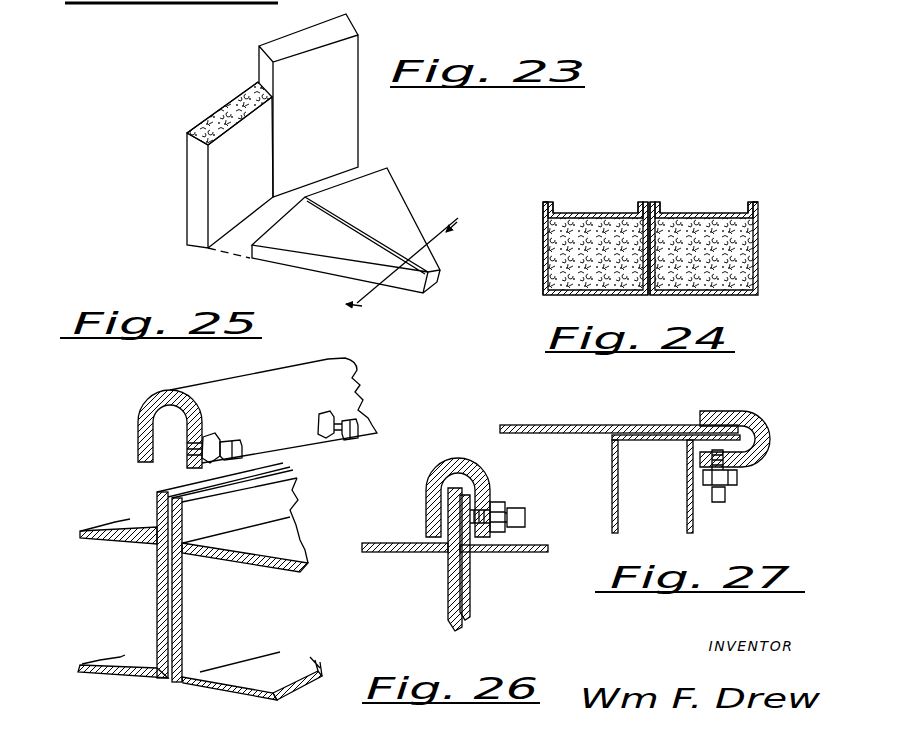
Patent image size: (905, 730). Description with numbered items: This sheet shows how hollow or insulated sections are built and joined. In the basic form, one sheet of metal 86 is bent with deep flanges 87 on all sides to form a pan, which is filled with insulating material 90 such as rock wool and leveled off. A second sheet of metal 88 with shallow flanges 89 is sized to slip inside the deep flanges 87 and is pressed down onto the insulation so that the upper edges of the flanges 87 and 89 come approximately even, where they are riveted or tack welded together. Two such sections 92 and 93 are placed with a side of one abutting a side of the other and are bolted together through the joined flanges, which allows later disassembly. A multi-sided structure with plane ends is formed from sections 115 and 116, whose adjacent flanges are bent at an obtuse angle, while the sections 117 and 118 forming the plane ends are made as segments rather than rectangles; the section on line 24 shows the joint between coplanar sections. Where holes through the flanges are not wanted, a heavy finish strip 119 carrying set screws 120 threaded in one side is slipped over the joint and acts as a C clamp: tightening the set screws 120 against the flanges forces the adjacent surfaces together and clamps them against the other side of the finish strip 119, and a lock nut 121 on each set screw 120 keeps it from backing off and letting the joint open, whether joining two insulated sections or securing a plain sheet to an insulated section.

In FIG. 23, the section line 24 is at (415, 272).
In FIG. 24, the sheet of metal 86 is at (563, 293).
In FIG. 24, the deep flanges 87 is at (760, 247).
In FIG. 24, the second sheet of metal 88 is at (597, 215).
In FIG. 24, the shallow flanges 89 is at (575, 200).
In FIG. 24, the insulating material 90 is at (546, 228).
In FIG. 24, the section 92 is at (713, 197).
In FIG. 24, the section 93 is at (540, 232).
In FIG. 23, the section 115 is at (183, 172).
In FIG. 23, the section 116 is at (360, 55).
In FIG. 23, the section 117 is at (270, 265).
In FIG. 23, the section 118 is at (368, 170).
In FIG. 25, the heavy finish strip 119 is at (257, 413).
In FIG. 26, the heavy finish strip 119 is at (452, 458).
In FIG. 27, the heavy finish strip 119 is at (698, 412).
In FIG. 25, the set screws 120 is at (356, 439).
In FIG. 26, the set screws 120 is at (526, 517).
In FIG. 27, the set screws 120 is at (723, 502).
In FIG. 25, the lock nut 121 is at (337, 415).
In FIG. 26, the lock nut 121 is at (496, 504).
In FIG. 27, the lock nut 121 is at (738, 475).